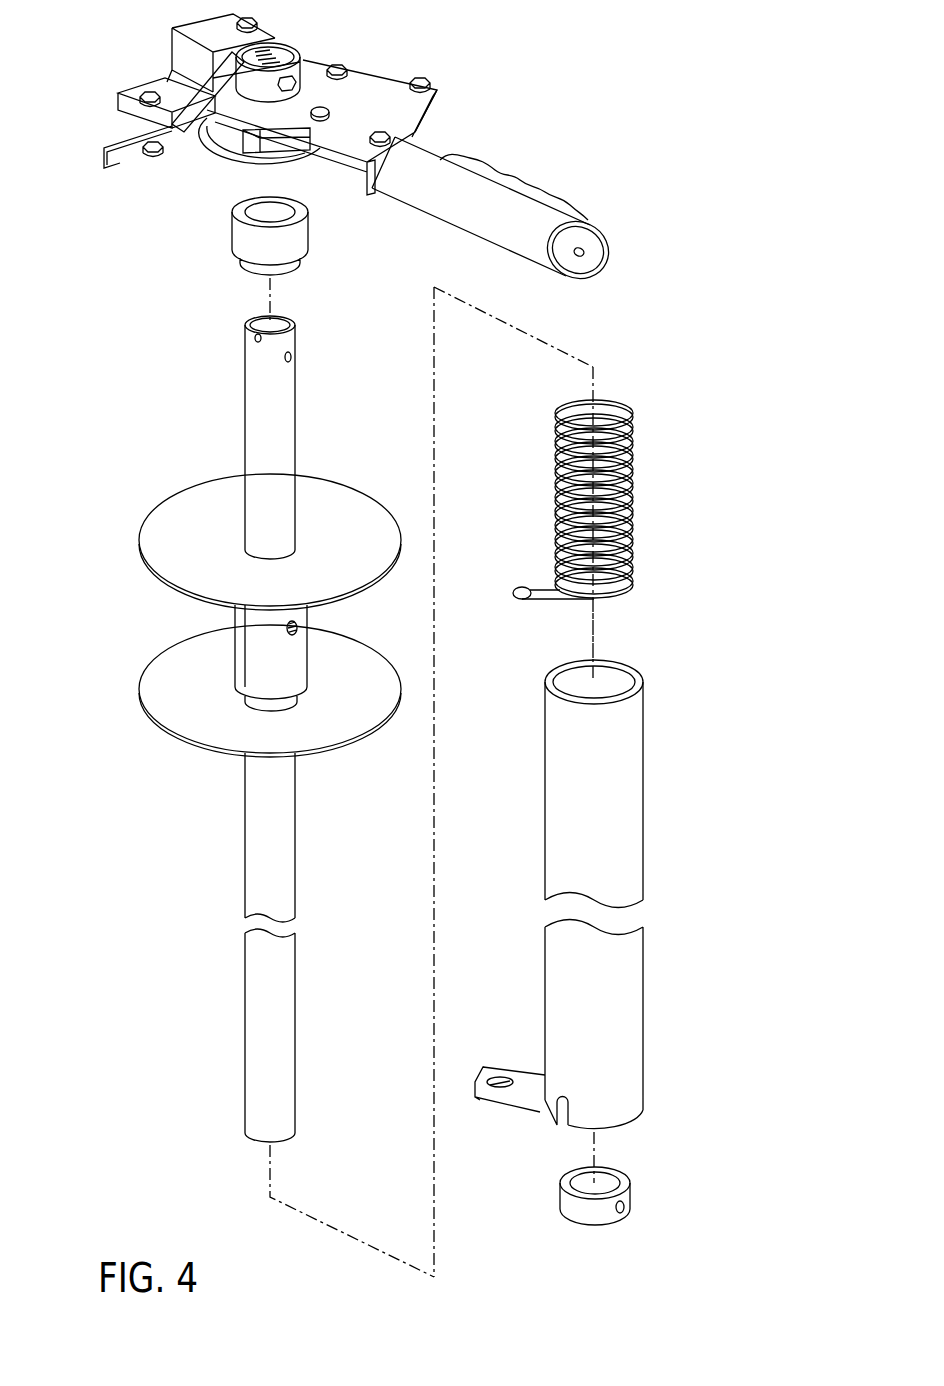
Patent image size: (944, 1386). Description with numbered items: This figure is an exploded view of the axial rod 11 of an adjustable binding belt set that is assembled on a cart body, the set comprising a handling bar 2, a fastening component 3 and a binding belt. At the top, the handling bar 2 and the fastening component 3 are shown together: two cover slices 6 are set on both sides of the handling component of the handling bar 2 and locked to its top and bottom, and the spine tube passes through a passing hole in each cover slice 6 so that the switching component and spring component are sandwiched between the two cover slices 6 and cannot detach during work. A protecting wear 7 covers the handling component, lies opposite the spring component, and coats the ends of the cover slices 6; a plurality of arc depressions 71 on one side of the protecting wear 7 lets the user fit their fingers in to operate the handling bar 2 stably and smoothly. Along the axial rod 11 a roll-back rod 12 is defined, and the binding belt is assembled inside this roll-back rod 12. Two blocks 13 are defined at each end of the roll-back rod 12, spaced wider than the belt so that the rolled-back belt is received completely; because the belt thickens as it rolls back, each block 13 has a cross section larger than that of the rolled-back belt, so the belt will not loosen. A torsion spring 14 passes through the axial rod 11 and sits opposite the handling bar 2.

The handling bar 2 is at (470, 105).
The fastening component 3 is at (126, 63).
The cover slice 6 is at (380, 78).
The protecting wear 7 is at (447, 212).
The arc depressions 71 is at (580, 204).
The axial rod 11 is at (234, 385).
The roll-back rod 12 is at (202, 668).
The block 13 is at (197, 560).
The torsion spring 14 is at (633, 473).